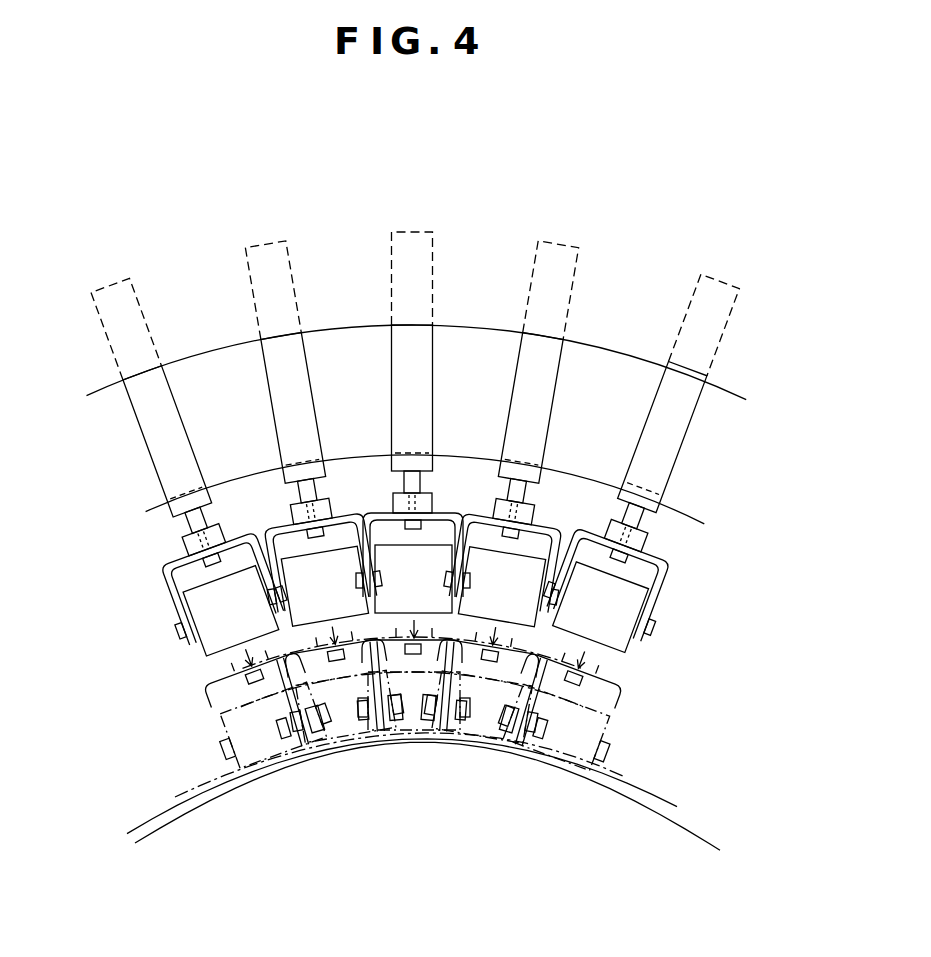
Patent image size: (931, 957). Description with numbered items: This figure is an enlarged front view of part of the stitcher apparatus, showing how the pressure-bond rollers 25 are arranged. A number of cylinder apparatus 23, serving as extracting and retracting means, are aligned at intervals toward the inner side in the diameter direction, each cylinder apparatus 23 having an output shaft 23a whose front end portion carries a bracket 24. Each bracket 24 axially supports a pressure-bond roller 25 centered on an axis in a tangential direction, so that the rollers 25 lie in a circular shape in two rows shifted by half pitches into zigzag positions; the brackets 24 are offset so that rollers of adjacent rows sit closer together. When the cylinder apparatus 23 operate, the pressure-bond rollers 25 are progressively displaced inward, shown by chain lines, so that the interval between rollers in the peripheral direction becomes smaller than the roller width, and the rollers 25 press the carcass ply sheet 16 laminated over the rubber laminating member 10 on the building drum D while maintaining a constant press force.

The cylinder apparatus 23 is at (280, 282).
The output shaft 23a is at (313, 493).
The bracket 24 is at (275, 528).
The pressure-bond roller 25 is at (203, 598).
The building drum D is at (623, 776).
The carcass ply sheet 16 is at (677, 807).
The rubber laminating member 10 is at (720, 850).